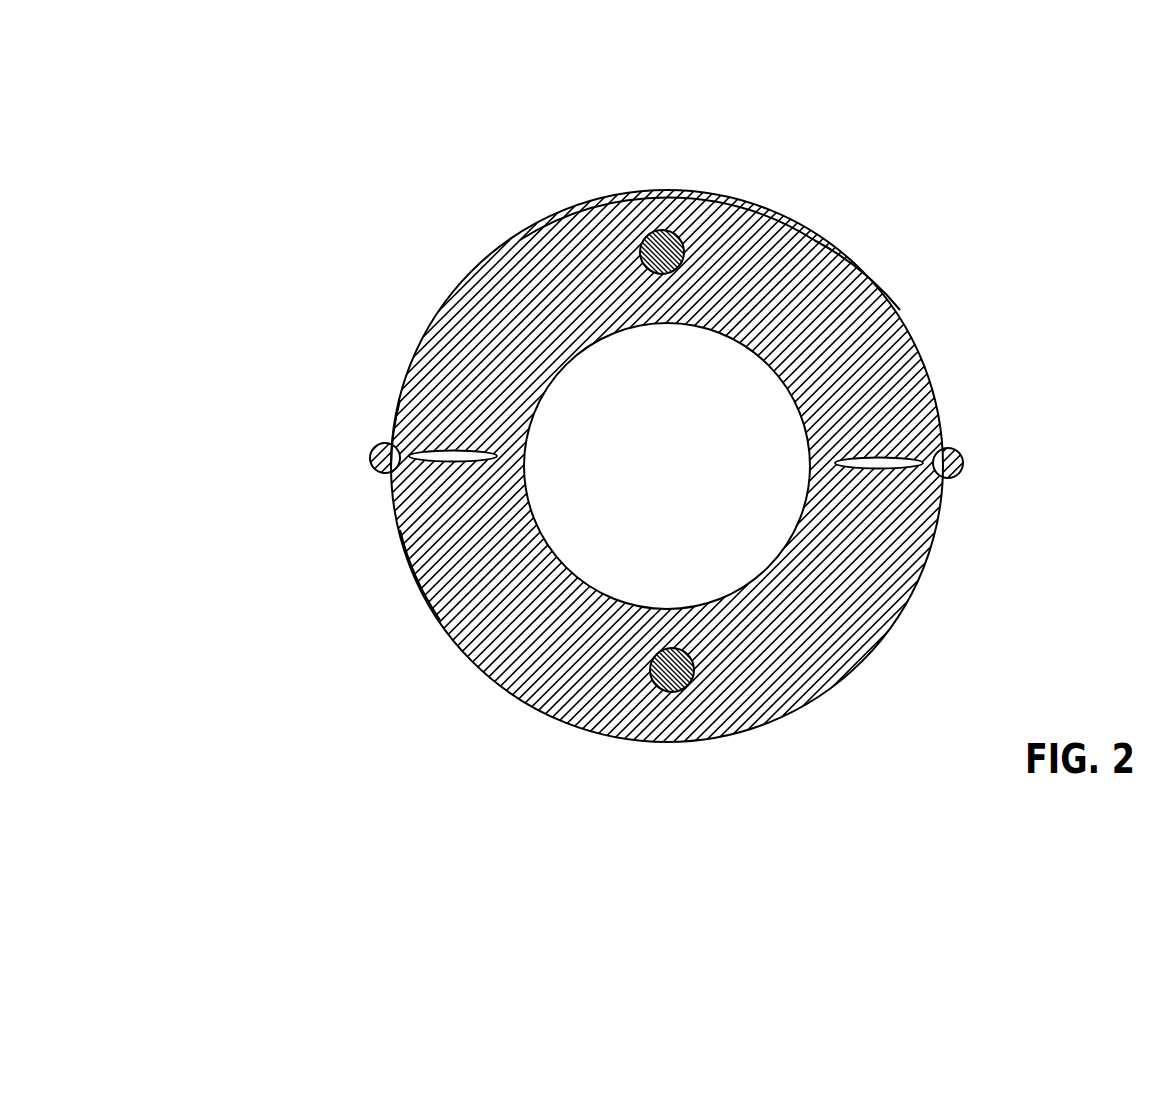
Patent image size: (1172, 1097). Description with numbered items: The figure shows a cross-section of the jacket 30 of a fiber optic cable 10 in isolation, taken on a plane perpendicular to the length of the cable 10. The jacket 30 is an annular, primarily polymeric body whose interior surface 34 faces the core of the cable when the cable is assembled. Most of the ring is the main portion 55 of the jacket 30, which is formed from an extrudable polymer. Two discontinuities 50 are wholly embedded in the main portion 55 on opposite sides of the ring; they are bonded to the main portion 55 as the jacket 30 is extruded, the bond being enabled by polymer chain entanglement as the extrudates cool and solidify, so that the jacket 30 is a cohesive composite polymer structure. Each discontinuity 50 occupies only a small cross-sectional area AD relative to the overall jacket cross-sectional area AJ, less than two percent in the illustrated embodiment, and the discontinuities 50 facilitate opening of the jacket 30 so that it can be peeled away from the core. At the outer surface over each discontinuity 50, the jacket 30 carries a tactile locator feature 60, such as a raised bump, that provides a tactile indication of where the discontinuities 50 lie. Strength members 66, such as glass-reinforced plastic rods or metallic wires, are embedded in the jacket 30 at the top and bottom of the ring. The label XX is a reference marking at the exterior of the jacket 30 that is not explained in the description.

The fiber optic cable 10 is at (586, 410).
The jacket 30 is at (470, 318).
The interior surface 34 is at (593, 340).
The discontinuities 50 is at (450, 457).
The main portion of the jacket 55 is at (568, 248).
The tactile locator features 60 is at (378, 444).
The strength members 66 is at (672, 248).
The outer diameter reference XX is at (843, 258).
The cross-sectional area of a discontinuity AD is at (430, 461).
The jacket cross-sectional area AJ is at (422, 598).